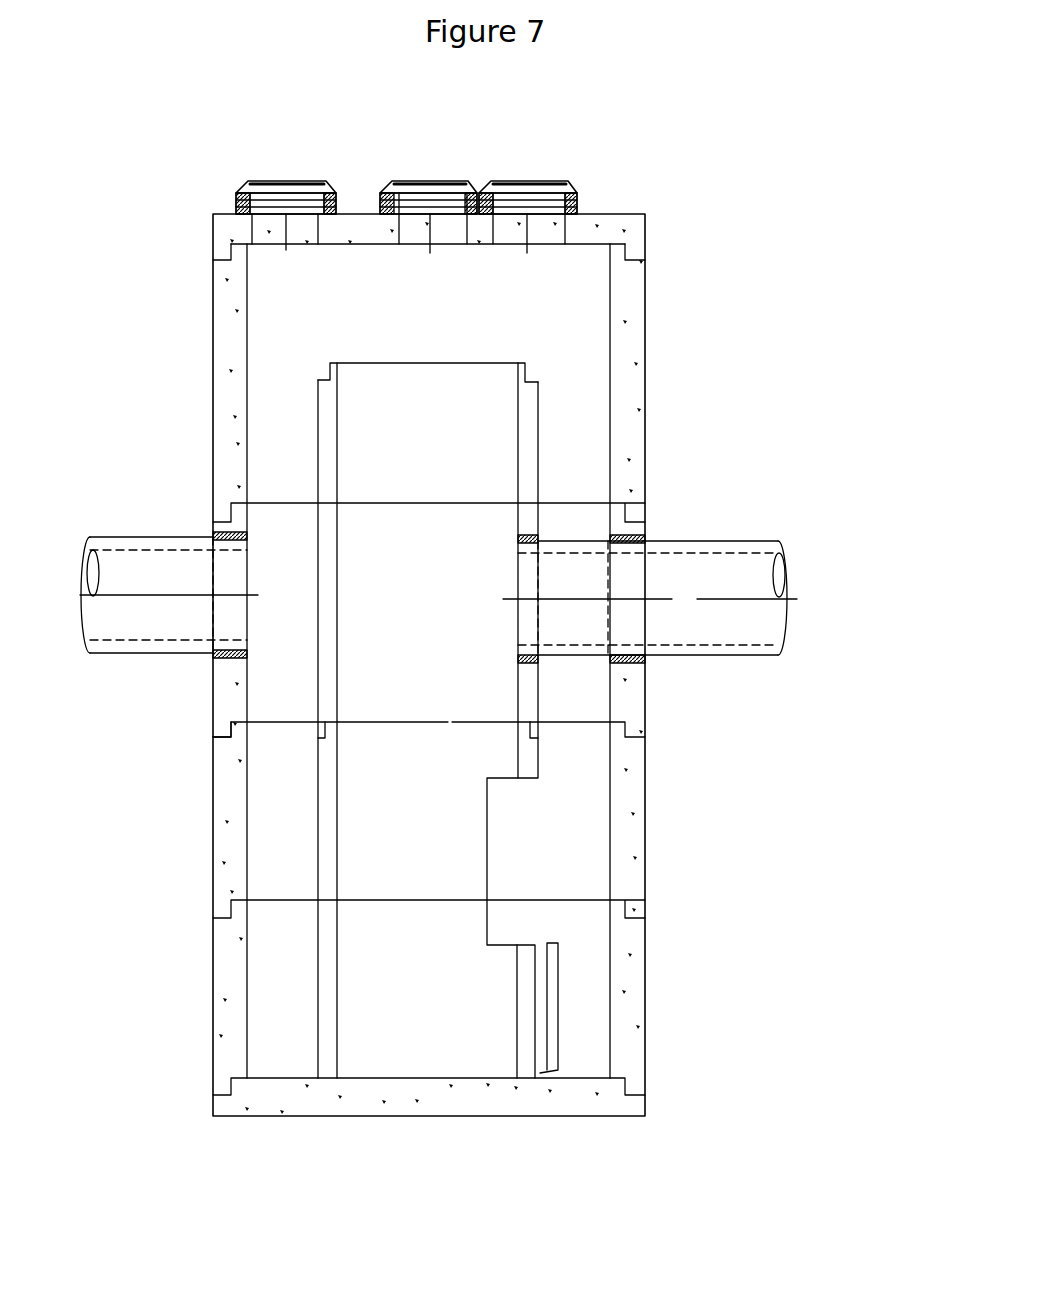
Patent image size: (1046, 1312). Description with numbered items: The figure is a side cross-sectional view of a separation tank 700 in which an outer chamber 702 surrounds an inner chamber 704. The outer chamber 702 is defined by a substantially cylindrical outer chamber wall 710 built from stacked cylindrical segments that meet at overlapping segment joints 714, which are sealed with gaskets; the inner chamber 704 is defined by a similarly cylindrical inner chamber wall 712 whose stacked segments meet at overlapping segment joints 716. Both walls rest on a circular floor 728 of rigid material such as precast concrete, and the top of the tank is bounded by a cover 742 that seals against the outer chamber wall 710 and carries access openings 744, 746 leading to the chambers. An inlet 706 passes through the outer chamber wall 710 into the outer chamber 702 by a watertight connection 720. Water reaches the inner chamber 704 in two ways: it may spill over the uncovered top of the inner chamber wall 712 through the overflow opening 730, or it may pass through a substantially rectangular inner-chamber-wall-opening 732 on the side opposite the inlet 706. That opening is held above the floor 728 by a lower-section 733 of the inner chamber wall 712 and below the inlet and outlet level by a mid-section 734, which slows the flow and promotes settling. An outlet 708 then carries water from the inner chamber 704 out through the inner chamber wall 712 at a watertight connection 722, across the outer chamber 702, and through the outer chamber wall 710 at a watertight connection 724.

The separation tank 700 is at (215, 187).
The outer chamber 702 is at (324, 284).
The inner chamber 704 is at (429, 720).
The inlet 706 is at (125, 543).
The outlet 708 is at (770, 540).
The outer chamber wall 710 is at (232, 315).
The inner chamber wall 712 is at (325, 460).
The segment joints 714 is at (213, 737).
The segment joints 716 is at (325, 738).
The watertight connection 720 is at (215, 652).
The watertight connection 722 is at (537, 537).
The watertight connection 724 is at (640, 662).
The floor 728 is at (413, 1090).
The overflow opening 730 is at (477, 362).
The inner-chamber-wall-opening 732 is at (490, 833).
The lower-section 733 is at (558, 1003).
The mid-section 734 is at (518, 710).
The cover 742 is at (630, 223).
The access opening 744 is at (430, 177).
The access openings 746 is at (523, 175).